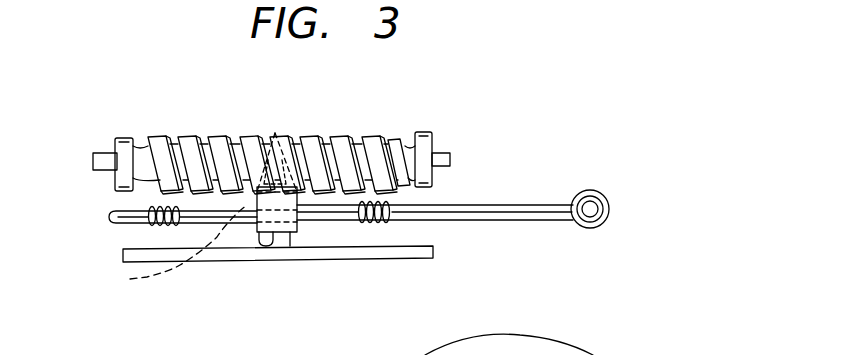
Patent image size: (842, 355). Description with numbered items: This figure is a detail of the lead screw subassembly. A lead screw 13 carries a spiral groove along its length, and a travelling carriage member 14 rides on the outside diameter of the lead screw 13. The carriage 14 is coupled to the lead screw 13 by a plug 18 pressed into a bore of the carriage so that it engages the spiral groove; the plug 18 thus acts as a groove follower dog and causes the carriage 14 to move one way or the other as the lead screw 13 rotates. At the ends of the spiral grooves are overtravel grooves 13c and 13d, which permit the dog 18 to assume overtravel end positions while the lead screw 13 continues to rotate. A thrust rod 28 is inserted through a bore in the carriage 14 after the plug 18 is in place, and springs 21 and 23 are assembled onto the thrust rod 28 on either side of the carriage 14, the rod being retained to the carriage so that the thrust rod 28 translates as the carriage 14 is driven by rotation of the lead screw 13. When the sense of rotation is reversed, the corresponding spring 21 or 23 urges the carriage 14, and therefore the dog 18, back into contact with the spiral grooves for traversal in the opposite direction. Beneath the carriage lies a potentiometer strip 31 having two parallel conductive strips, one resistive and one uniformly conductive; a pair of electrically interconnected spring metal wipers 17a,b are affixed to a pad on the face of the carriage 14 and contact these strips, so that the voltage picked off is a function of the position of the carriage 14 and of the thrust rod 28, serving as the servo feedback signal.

The lead screw 13 is at (233, 131).
The overtravel groove 13c is at (140, 134).
The overtravel groove 13d is at (412, 131).
The travelling carriage member 14 is at (290, 234).
The spring metal wipers 17a,b is at (268, 247).
The plug 18 is at (171, 248).
The spring 21 is at (150, 208).
The spring 23 is at (402, 203).
The thrust rod 28 is at (536, 204).
The potentiometer strip 31 is at (407, 256).